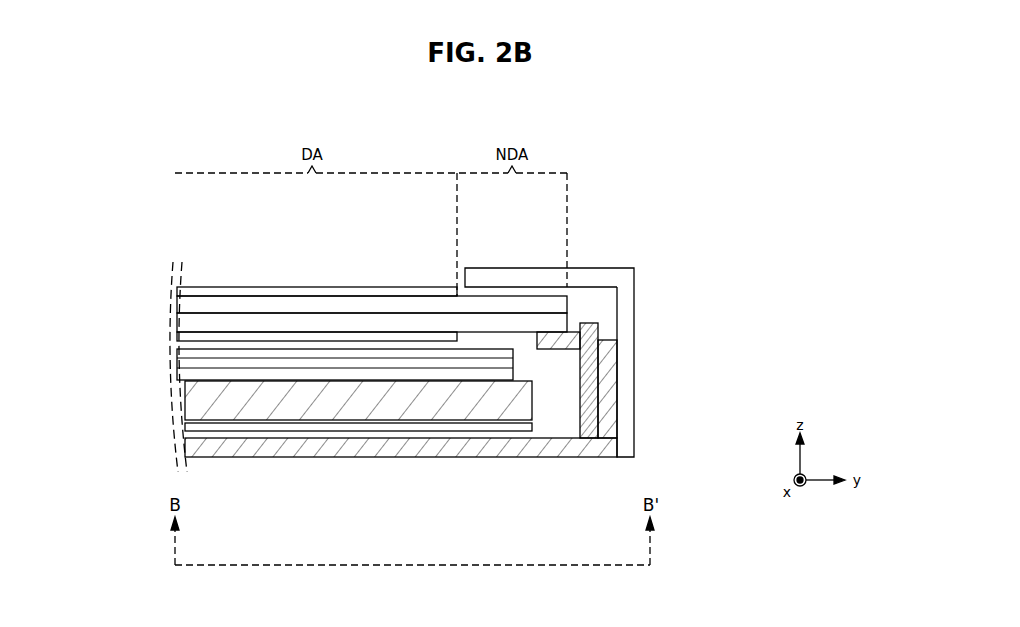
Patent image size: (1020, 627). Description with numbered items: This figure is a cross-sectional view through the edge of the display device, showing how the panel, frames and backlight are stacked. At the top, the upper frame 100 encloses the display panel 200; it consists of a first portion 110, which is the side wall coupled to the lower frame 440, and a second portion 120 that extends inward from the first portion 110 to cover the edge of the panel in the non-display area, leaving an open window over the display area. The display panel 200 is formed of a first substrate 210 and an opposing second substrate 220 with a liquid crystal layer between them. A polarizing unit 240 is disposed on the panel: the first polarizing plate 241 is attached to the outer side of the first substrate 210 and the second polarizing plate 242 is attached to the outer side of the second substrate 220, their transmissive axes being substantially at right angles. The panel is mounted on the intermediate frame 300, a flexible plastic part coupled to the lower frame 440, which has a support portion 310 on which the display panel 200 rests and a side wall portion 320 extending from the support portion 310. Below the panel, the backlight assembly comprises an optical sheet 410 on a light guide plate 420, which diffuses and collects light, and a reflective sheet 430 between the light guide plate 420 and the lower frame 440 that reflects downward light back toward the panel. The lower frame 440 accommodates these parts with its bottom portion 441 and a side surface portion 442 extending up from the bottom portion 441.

The upper frame 100 is at (610, 352).
The first portion 110 is at (660, 372).
The second portion 120 is at (530, 277).
The display panel 200 is at (372, 261).
The first substrate 210 is at (362, 322).
The second substrate 220 is at (422, 305).
The polarizing unit 240 is at (317, 265).
The first polarizing plate 241 is at (282, 337).
The second polarizing plate 242 is at (220, 292).
The intermediate frame 300 is at (646, 380).
The support portion 310 is at (557, 347).
The side wall portion 320 is at (590, 388).
The optical sheet 410 is at (168, 348).
The light guide plate 420 is at (191, 398).
The reflective sheet 430 is at (191, 426).
The lower frame 440 is at (470, 414).
The bottom portion 441 is at (553, 452).
The side surface portion 442 is at (607, 410).